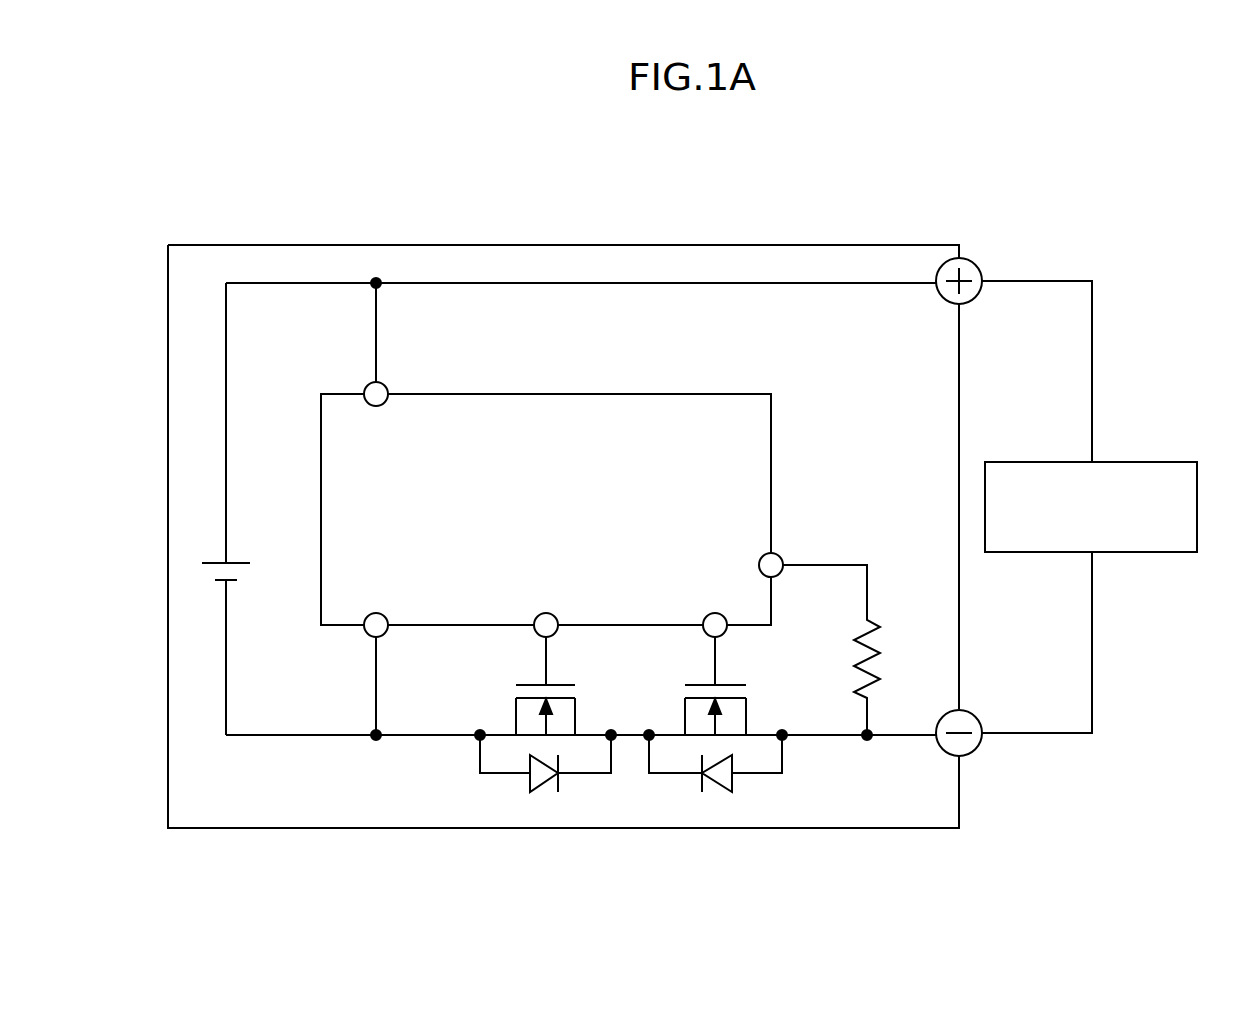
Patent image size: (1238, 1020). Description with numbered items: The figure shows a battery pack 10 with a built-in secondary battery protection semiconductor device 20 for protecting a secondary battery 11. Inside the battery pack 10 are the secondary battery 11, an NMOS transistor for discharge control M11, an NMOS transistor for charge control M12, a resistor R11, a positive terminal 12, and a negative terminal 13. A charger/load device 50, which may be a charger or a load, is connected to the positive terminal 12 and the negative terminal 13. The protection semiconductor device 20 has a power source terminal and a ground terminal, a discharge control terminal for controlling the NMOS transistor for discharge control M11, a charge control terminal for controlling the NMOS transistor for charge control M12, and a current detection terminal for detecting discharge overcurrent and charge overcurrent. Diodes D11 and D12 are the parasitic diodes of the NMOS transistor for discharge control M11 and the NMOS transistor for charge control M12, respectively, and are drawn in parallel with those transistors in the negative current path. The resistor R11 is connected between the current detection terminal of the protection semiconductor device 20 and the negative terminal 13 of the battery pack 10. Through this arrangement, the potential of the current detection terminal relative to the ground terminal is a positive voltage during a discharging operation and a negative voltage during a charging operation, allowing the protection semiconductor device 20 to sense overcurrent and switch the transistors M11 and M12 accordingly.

The battery pack 10 is at (563, 245).
The secondary battery 11 is at (238, 562).
The positive terminal 12 is at (980, 262).
The negative terminal 13 is at (978, 750).
The protection semiconductor device 20 is at (567, 393).
The charger/load device 50 is at (1120, 462).
The NMOS transistor for discharge control M11 is at (518, 686).
The NMOS transistor for charge control M12 is at (741, 686).
The diode D11 is at (545, 776).
The diode D12 is at (715, 776).
The resistor R11 is at (854, 652).